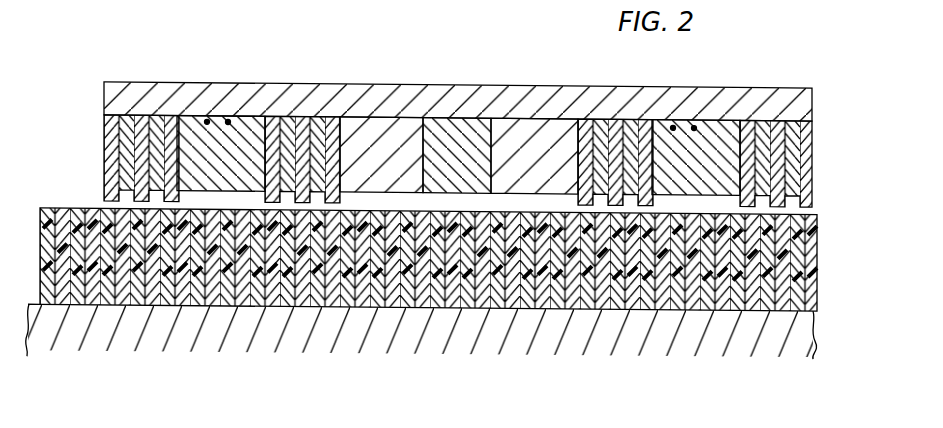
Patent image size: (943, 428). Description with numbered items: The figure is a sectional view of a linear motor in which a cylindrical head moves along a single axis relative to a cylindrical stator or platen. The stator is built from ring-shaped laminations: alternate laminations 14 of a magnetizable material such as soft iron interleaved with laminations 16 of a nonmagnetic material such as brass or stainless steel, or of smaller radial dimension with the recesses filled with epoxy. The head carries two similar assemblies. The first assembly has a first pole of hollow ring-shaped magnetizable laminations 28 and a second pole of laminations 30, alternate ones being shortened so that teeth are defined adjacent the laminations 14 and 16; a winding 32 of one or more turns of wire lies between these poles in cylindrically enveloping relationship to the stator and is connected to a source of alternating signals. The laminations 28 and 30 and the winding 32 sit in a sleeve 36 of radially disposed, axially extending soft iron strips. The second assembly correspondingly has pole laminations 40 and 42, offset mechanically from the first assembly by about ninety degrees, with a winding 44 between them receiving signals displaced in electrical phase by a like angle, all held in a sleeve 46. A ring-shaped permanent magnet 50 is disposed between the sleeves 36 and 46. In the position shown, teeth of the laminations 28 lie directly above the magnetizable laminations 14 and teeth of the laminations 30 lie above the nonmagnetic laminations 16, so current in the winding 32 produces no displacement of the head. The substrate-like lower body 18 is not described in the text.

The magnetizable laminations 14 is at (103, 206).
The nonmagnetic laminations 16 is at (90, 204).
The substrate 18 is at (768, 333).
The first pole laminations 28 is at (104, 121).
The second pole laminations 30 is at (272, 129).
The winding 32 is at (228, 118).
The sleeve 36 is at (353, 92).
The first pole laminations of second assembly 40 is at (582, 140).
The second pole laminations of second assembly 42 is at (812, 141).
The winding 44 is at (694, 120).
The sleeve 46 is at (577, 92).
The permanent magnet 50 is at (460, 91).